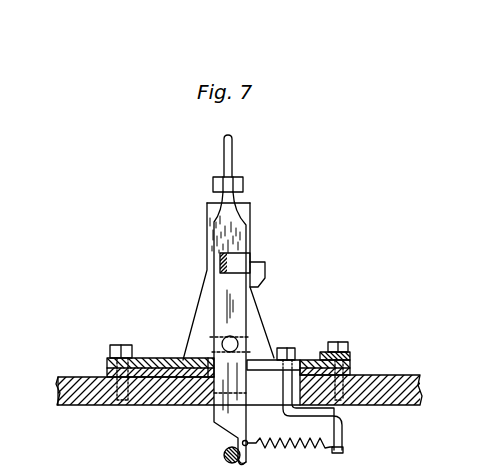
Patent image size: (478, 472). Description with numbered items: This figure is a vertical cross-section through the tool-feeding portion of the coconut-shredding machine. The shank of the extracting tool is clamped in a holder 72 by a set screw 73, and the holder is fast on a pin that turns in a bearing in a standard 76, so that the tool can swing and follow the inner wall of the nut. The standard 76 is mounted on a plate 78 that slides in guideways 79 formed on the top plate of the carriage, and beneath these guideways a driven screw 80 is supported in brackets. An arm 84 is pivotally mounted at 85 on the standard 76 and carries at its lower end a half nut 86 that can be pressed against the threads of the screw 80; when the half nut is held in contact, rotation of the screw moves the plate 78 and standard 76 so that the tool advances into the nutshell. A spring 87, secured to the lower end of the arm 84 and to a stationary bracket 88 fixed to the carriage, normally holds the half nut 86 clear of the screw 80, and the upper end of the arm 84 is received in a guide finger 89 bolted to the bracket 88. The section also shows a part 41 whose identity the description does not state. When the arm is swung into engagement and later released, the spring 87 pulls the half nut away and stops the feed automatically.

The base plate 41 is at (237, 423).
The holder 72 is at (249, 213).
The set screw 73 is at (243, 185).
The standard 76 is at (266, 309).
The plate 78 is at (183, 360).
The guideways 79 is at (132, 355).
The screw 80 is at (223, 455).
The arm 84 is at (238, 300).
The pivot 85 is at (239, 341).
The half nut 86 is at (249, 461).
The spring 87 is at (306, 448).
The stationary bracket 88 is at (340, 440).
The guide finger 89 is at (236, 267).